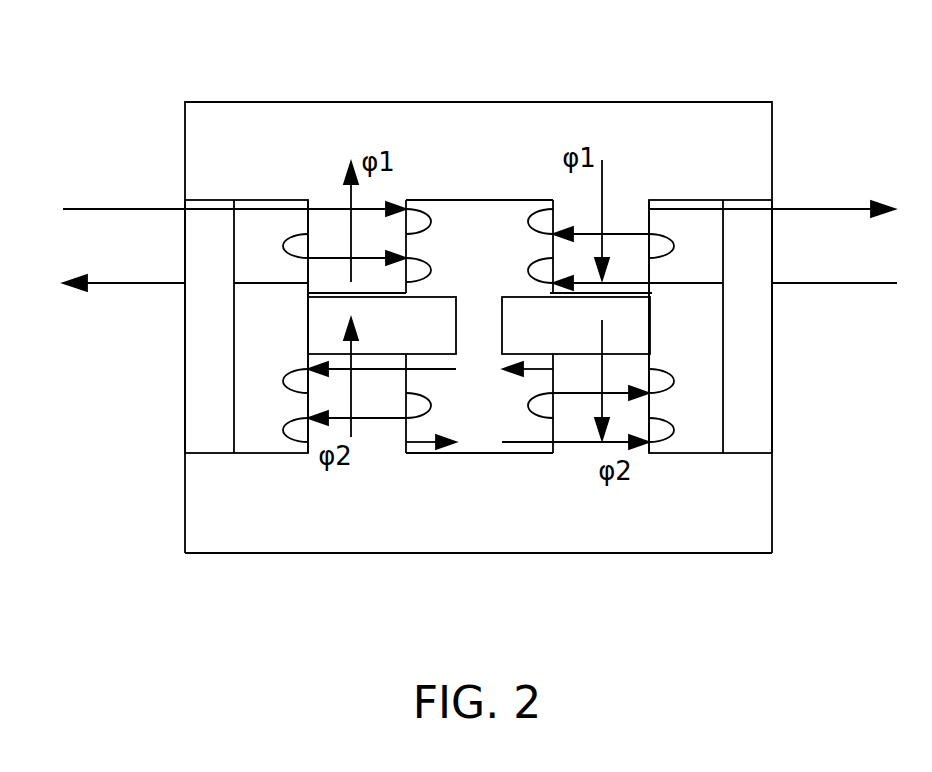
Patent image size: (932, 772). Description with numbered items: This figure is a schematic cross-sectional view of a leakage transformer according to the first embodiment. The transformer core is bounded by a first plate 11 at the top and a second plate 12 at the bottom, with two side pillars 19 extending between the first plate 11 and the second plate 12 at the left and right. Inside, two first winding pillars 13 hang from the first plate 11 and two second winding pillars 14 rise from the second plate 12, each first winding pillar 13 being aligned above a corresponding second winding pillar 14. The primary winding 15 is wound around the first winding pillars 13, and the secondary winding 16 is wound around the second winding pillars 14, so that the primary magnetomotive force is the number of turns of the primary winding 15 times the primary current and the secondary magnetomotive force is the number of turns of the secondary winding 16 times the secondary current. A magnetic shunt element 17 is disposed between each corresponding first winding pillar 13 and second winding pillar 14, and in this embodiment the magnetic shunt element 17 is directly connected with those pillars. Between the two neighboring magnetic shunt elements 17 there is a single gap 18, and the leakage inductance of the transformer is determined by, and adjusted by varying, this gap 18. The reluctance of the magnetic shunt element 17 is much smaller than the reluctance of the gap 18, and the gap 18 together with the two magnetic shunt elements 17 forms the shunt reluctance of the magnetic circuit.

The first plate 11 is at (528, 127).
The second plate 12 is at (473, 525).
The first winding pillar 13 is at (325, 227).
The second winding pillar 14 is at (373, 437).
The primary winding 15 is at (123, 209).
The secondary winding 16 is at (442, 370).
The magnetic shunt element 17 is at (318, 323).
The gap 18 is at (475, 320).
The side pillar 19 is at (210, 364).